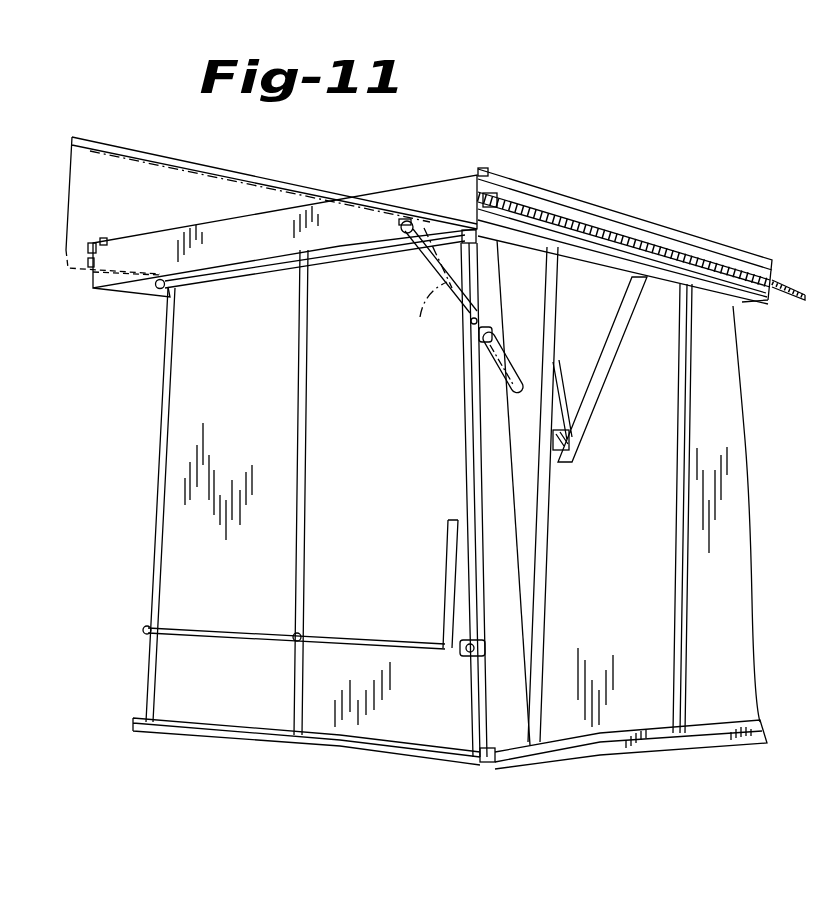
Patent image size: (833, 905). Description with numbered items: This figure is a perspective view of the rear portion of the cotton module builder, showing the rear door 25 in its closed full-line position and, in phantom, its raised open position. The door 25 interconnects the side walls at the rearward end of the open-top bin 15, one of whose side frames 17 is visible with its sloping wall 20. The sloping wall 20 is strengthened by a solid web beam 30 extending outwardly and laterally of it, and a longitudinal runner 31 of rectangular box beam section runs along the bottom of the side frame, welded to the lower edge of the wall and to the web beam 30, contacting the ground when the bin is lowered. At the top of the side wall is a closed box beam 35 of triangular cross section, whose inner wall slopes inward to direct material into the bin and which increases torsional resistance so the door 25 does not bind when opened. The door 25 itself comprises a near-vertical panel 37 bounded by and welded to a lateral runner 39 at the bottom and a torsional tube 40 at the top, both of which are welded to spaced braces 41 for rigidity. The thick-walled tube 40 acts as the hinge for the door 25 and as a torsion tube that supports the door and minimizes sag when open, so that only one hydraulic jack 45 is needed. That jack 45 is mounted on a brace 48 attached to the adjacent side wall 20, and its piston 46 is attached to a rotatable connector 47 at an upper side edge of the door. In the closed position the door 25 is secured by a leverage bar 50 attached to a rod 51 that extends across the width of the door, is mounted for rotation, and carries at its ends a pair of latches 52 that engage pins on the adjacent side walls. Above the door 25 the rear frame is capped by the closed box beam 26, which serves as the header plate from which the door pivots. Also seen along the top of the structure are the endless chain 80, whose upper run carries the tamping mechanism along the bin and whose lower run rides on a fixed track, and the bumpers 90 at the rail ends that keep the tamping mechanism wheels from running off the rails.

The open-top bin 15 is at (598, 192).
The side frame 17 is at (732, 635).
The sloping wall 20 is at (618, 630).
The rear door 25 is at (226, 171).
The closed box beam 26 is at (407, 192).
The solid web beam 30 is at (667, 532).
The longitudinal runner 31 is at (762, 733).
The closed box beam 35 is at (718, 246).
The panel 37 is at (180, 166).
The lateral runner 39 is at (310, 742).
The torsional tube 40 is at (346, 258).
The spaced braces 41 is at (160, 432).
The hydraulic jack 45 is at (502, 358).
The piston 46 is at (479, 337).
The rotatable connector 47 is at (479, 322).
The brace 48 is at (590, 404).
The leverage bar 50 is at (447, 543).
The rod 51 is at (360, 636).
The latches 52 is at (468, 658).
The endless chain 80 is at (652, 240).
The bumpers 90 is at (103, 240).